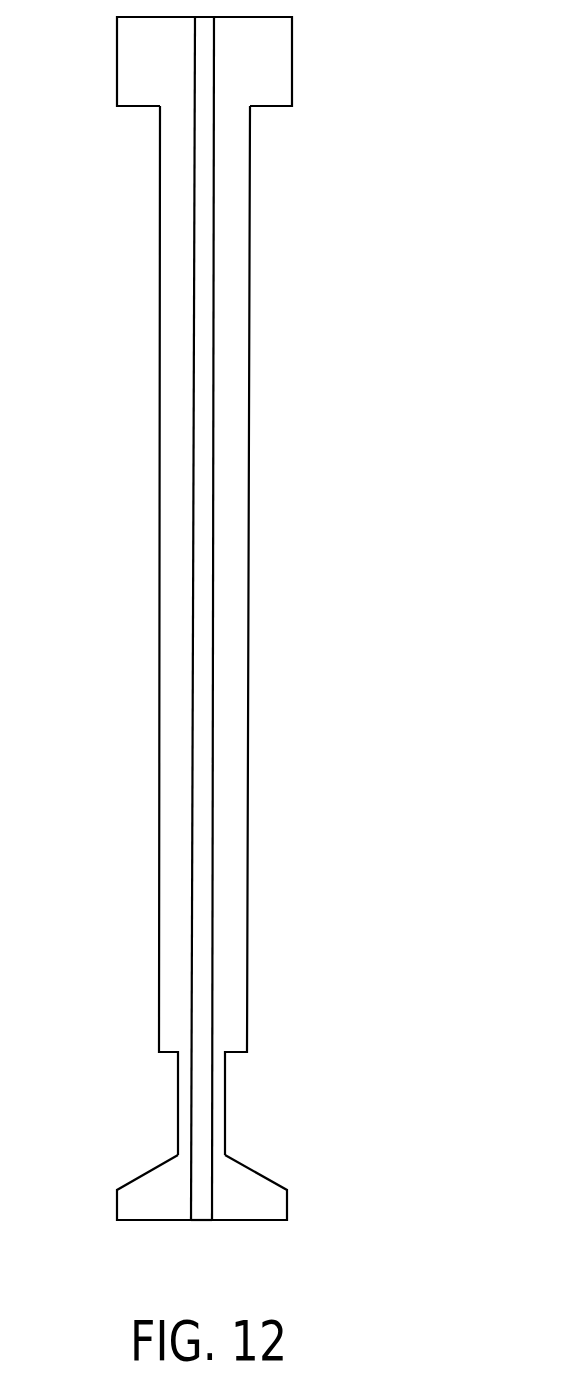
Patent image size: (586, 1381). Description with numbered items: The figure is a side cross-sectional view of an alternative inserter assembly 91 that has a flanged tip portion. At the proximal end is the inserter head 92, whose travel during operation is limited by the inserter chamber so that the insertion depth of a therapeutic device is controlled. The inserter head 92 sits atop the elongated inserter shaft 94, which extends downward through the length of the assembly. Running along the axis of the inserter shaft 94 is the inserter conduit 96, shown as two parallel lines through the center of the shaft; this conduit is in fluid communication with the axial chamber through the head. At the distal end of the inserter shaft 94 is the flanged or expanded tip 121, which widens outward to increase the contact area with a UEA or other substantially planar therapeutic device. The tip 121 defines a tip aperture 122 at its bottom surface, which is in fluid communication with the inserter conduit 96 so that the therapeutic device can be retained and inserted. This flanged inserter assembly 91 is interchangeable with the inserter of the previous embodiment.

The inserter assembly 91 is at (239, 650).
The inserter head 92 is at (133, 73).
The inserter shaft 94 is at (158, 739).
The inserter conduit 96 is at (203, 912).
The flanged tip 121 is at (135, 1207).
The tip aperture 122 is at (197, 1208).